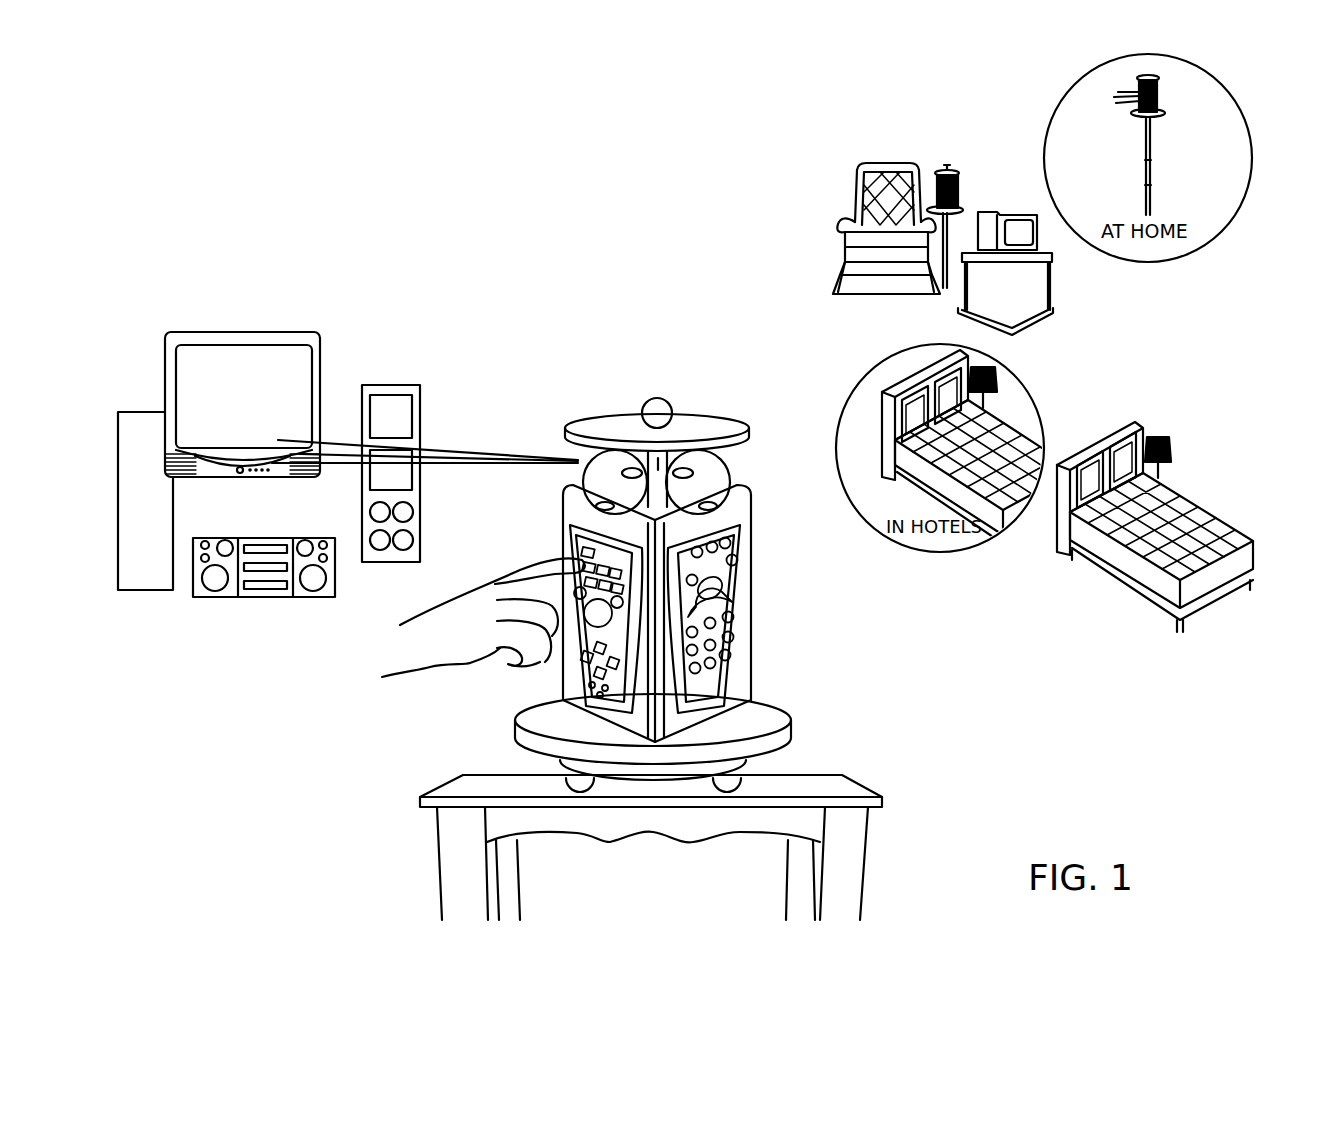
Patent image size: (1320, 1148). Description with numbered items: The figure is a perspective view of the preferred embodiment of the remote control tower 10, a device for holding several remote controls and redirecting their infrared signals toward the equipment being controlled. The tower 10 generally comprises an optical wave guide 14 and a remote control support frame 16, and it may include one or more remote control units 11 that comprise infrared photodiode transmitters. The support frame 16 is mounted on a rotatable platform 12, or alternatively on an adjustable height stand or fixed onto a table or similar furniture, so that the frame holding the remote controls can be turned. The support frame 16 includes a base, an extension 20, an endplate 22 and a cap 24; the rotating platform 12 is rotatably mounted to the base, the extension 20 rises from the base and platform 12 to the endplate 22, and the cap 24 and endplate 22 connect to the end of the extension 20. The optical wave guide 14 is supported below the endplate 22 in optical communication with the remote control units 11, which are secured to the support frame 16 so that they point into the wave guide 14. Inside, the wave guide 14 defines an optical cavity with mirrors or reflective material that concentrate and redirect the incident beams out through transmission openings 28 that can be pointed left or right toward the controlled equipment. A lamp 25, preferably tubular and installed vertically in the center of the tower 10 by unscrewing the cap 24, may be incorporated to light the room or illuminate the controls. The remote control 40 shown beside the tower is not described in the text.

The remote control tower 10 is at (548, 318).
The remote control unit 11 is at (738, 576).
The rotatable platform 12 is at (790, 713).
The optical wave guide 14 is at (630, 566).
The remote control support frame 16 is at (732, 423).
The extension 20 is at (657, 427).
The endplate 22 is at (597, 427).
The cap 24 is at (660, 405).
The lamp 25 is at (657, 466).
The transmission opening 28 is at (586, 458).
The remote control 40 is at (458, 446).